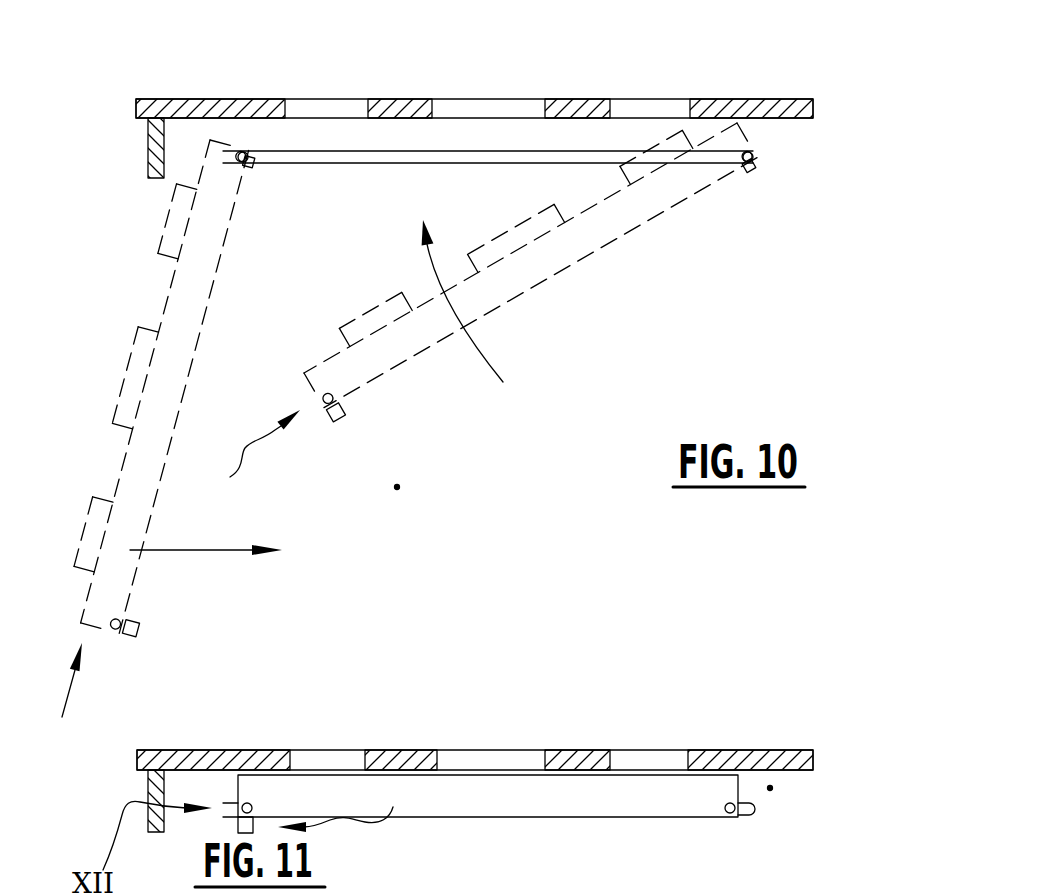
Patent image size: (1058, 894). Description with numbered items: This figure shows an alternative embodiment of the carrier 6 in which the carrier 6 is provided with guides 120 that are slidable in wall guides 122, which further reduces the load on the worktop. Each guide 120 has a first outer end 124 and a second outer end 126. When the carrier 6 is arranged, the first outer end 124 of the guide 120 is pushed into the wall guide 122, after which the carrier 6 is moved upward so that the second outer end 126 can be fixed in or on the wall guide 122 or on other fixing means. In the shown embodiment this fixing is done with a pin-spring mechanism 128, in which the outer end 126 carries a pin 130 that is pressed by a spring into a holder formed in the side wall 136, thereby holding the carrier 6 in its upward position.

In FIG. 10, the carrier 6 is at (178, 302).
In FIG. 11, the carrier 6 is at (638, 797).
In FIG. 10, the guide 120 is at (250, 162).
In FIG. 11, the guide 120 is at (732, 814).
In FIG. 10, the wall guide 122 is at (367, 160).
In FIG. 11, the wall guide 122 is at (315, 848).
In FIG. 10, the first outer end 124 is at (246, 112).
In FIG. 10, the second outer end 126 is at (62, 717).
In FIG. 11, the pin-spring mechanism 128 is at (351, 804).
In FIG. 11, the pin 130 is at (254, 805).
In FIG. 10, the side wall 136 is at (397, 487).
In FIG. 11, the side wall 136 is at (770, 788).